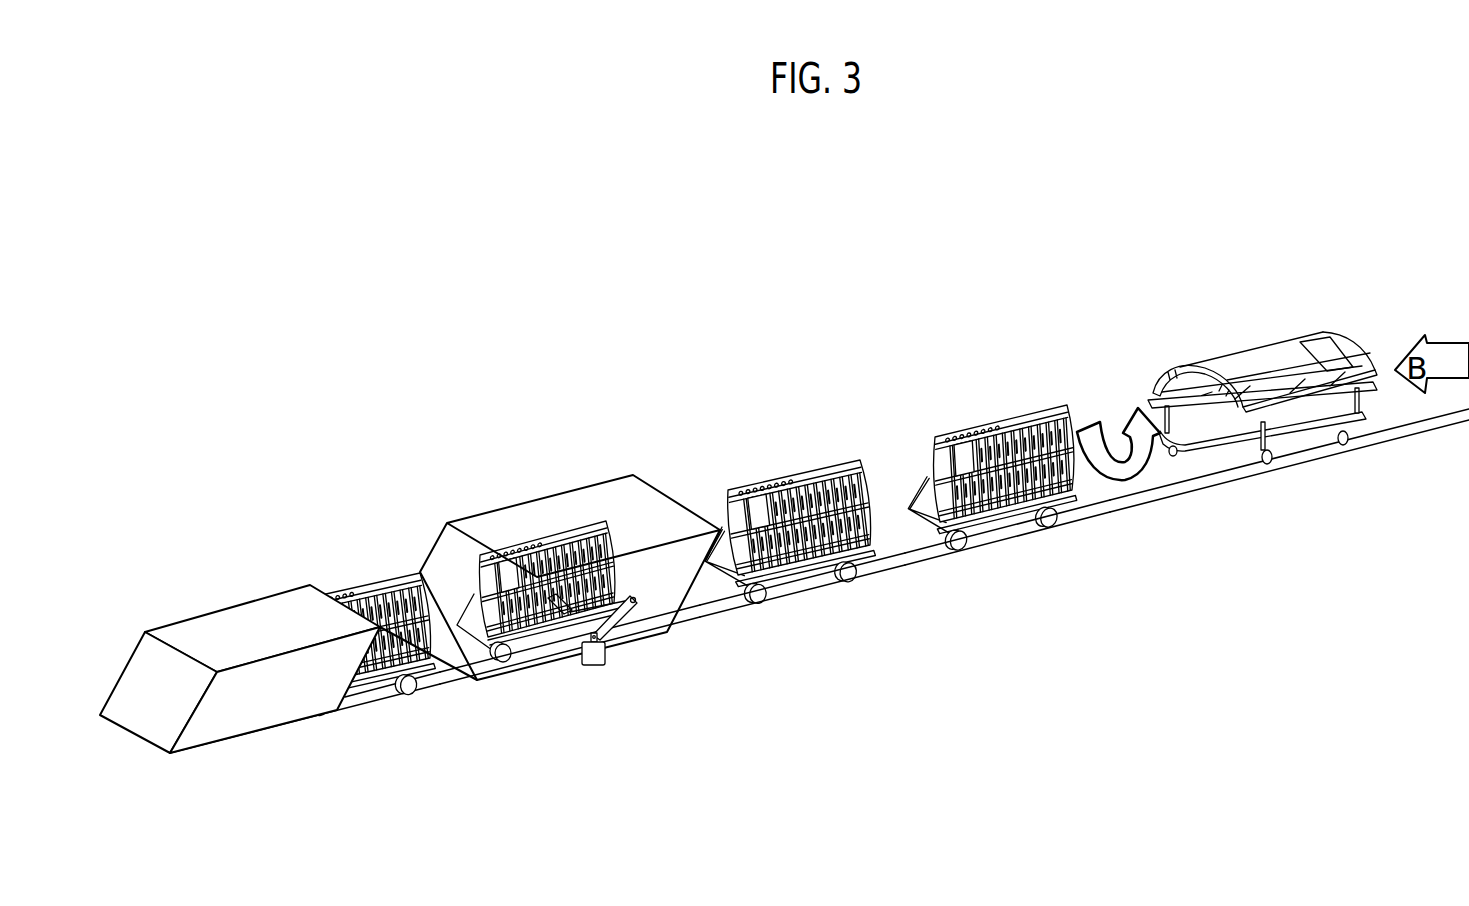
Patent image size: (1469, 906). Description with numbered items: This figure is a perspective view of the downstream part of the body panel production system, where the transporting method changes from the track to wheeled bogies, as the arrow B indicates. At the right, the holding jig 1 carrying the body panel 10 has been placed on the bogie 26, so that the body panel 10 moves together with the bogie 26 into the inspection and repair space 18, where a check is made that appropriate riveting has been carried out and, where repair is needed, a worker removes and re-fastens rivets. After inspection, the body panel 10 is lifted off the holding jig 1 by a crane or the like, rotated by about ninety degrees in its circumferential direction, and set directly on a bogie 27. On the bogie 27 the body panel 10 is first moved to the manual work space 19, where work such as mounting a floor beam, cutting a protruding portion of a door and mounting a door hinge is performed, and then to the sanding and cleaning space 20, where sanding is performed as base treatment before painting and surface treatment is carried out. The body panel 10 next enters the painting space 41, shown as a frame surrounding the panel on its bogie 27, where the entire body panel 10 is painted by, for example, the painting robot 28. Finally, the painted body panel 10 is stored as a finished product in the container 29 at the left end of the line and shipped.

The holding jig 1 is at (1209, 361).
The body panel 10 is at (403, 586).
The inspection and repair space 18 is at (1289, 393).
The manual work space 19 is at (935, 407).
The sanding and cleaning space 20 is at (723, 455).
The bogie 26 is at (1305, 440).
The bogie 27 is at (386, 688).
The painting robot 28 is at (597, 660).
The container 29 is at (283, 713).
The painting space 41 is at (625, 533).